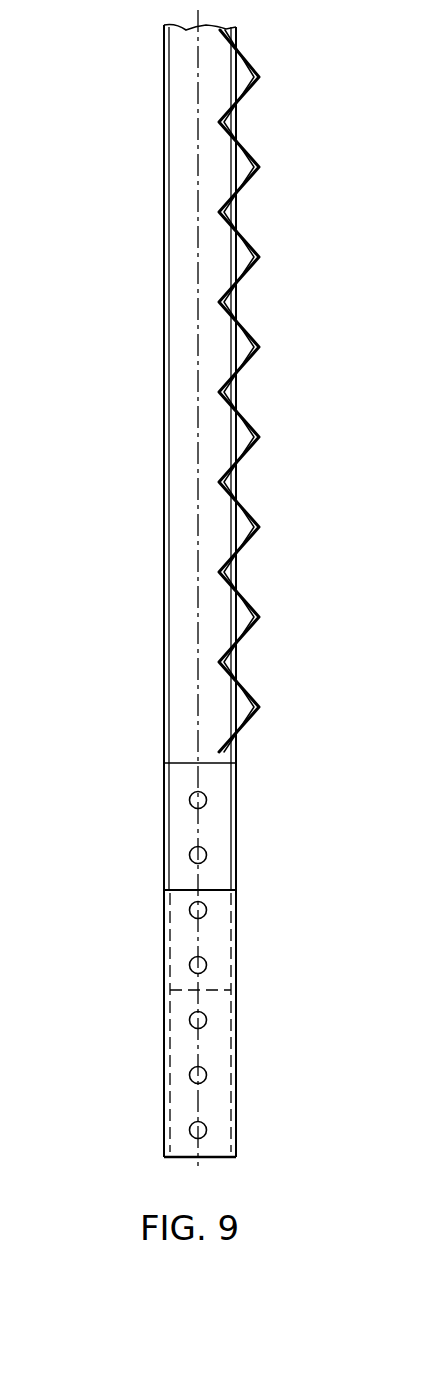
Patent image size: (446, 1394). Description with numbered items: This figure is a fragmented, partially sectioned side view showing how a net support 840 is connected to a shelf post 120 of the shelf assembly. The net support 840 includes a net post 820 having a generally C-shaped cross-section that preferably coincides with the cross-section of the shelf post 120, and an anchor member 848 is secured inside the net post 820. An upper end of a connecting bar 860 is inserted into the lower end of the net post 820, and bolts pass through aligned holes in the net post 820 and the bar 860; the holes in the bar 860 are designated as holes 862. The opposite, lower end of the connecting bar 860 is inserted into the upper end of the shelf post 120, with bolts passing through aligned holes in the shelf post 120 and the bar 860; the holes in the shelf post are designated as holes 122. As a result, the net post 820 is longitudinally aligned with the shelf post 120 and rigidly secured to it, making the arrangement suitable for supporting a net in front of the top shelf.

The net support 840 is at (122, 200).
The net post 820 is at (175, 462).
The anchor member 848 is at (255, 430).
The connecting bar 860 is at (185, 823).
The holes in the bar 862 is at (195, 800).
The shelf post 120 is at (182, 993).
The holes in the shelf post 122 is at (193, 967).